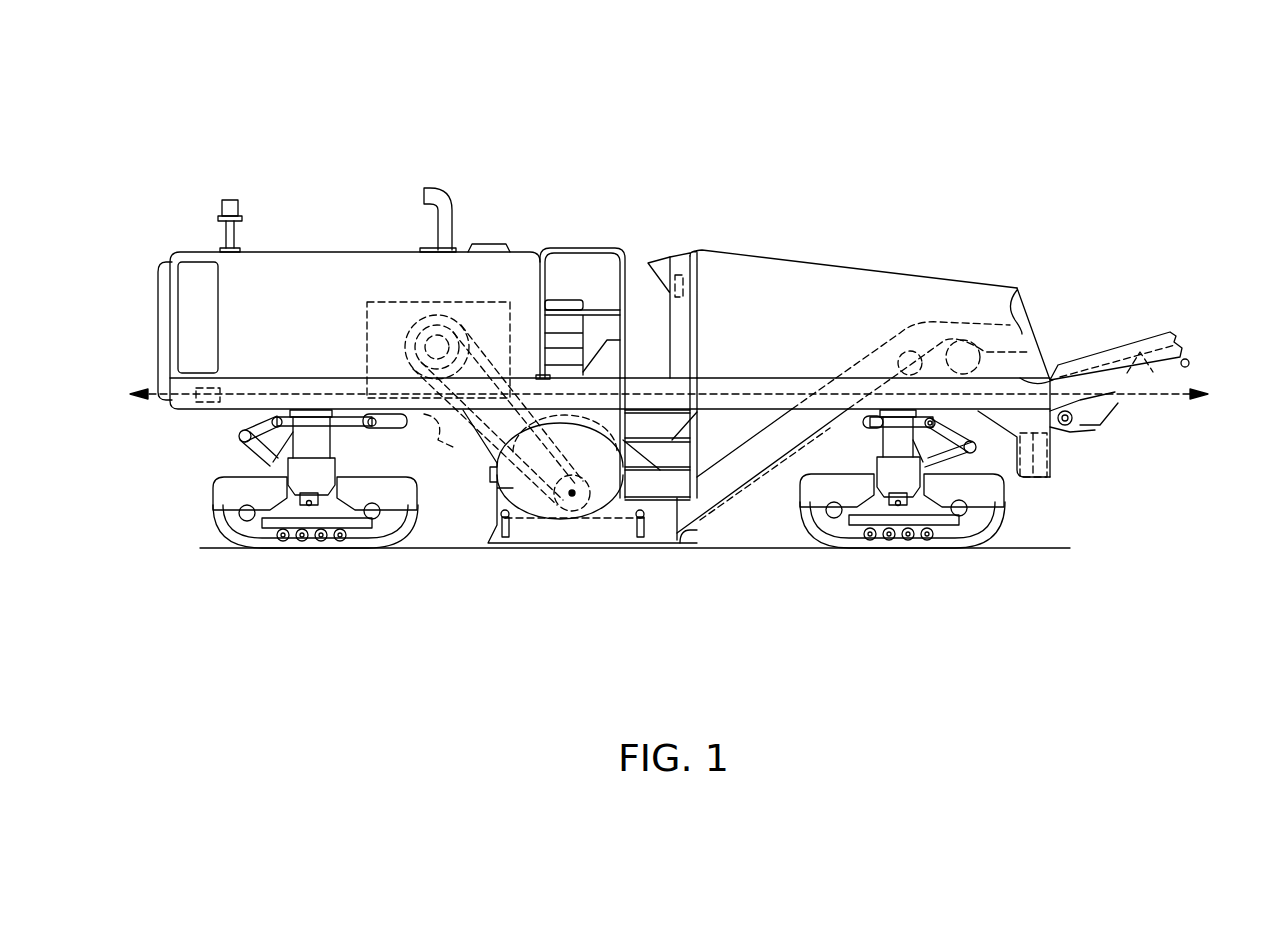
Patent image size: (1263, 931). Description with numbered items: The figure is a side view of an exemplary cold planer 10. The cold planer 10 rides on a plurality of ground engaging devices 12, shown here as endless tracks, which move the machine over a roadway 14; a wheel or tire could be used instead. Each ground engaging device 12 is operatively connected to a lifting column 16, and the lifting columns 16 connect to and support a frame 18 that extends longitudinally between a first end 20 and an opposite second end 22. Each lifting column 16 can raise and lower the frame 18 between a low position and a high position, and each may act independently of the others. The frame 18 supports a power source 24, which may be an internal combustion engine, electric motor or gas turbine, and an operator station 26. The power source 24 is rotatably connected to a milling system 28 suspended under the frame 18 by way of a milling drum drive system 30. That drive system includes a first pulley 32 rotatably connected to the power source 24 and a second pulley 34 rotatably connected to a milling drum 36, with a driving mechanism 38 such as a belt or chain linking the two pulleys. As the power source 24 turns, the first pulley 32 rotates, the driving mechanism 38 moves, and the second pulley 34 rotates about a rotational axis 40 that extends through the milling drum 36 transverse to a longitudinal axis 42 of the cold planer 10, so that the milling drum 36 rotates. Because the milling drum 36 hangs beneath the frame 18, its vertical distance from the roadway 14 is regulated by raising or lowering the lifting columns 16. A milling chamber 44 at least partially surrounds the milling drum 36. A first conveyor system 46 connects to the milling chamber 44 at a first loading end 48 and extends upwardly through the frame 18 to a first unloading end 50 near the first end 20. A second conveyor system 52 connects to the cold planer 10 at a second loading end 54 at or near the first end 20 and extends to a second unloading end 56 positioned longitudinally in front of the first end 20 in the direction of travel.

The cold planer 10 is at (1090, 68).
The ground engaging devices 12 is at (330, 537).
The roadway 14 is at (212, 547).
The lifting column 16 is at (257, 447).
The frame 18 is at (205, 407).
The first end 20 is at (1053, 420).
The second end 22 is at (172, 409).
The power source 24 is at (375, 333).
The operator station 26 is at (636, 262).
The milling system 28 is at (615, 560).
The milling drum drive system 30 is at (460, 303).
The first pulley 32 is at (388, 303).
The second pulley 34 is at (572, 496).
The milling drum 36 is at (530, 548).
The driving mechanism 38 is at (447, 420).
The rotational axis 40 is at (553, 520).
The longitudinal axis 42 is at (1172, 390).
The milling chamber 44 is at (586, 431).
The first conveyor system 46 is at (747, 428).
The first loading end 48 is at (655, 528).
The first unloading end 50 is at (1020, 290).
The second conveyor system 52 is at (1153, 372).
The second loading end 54 is at (1052, 373).
The second unloading end 56 is at (1188, 363).